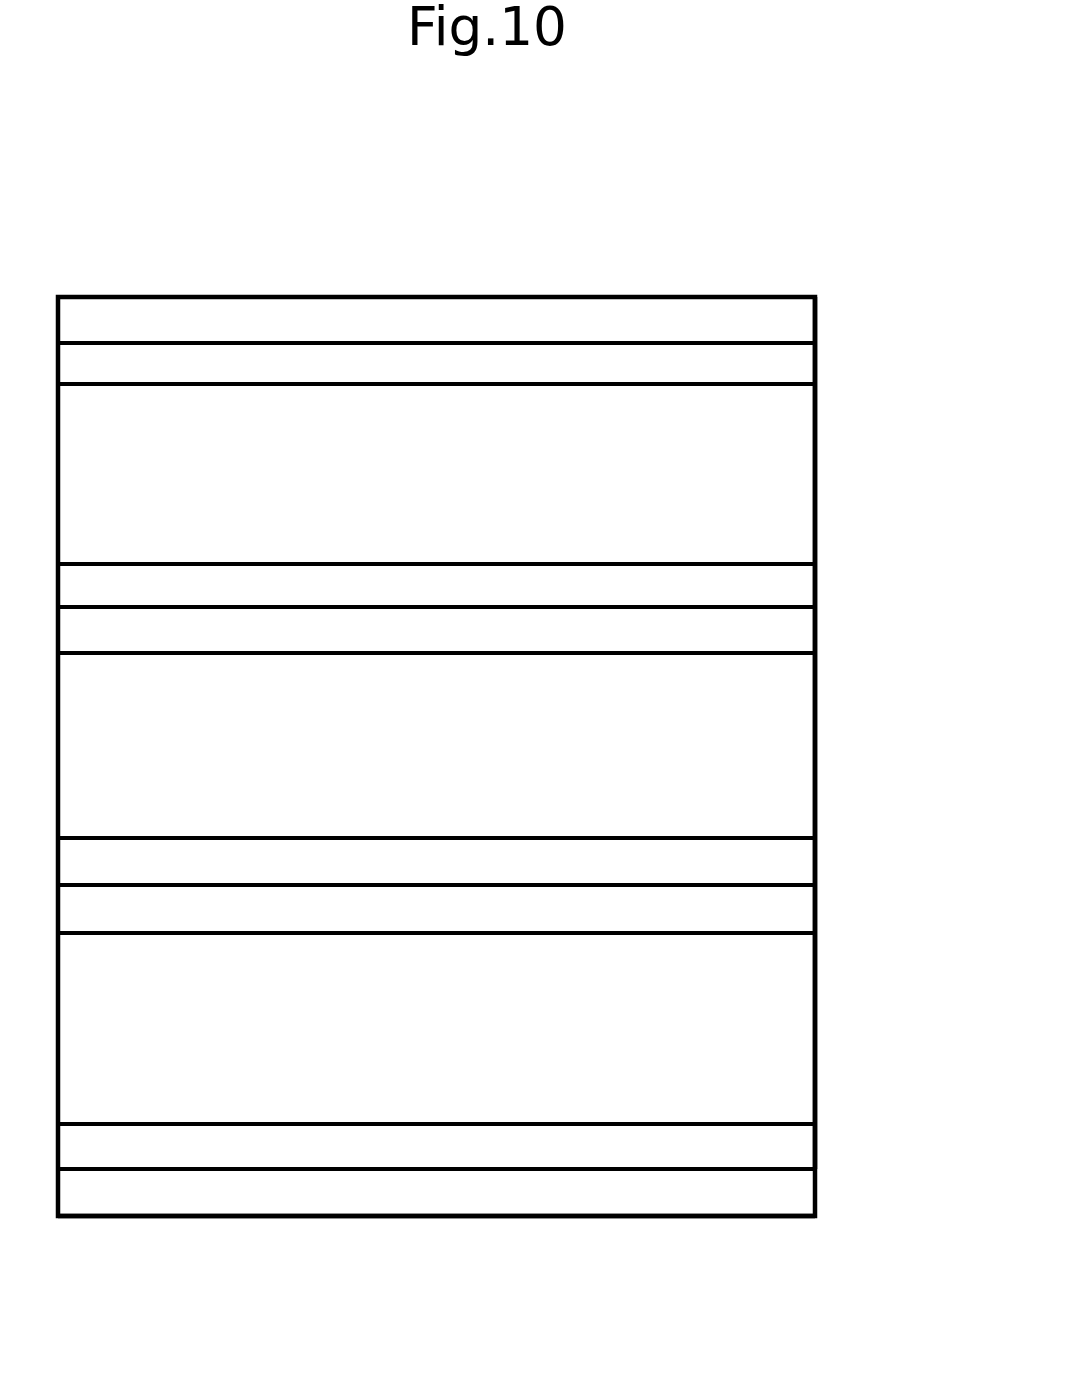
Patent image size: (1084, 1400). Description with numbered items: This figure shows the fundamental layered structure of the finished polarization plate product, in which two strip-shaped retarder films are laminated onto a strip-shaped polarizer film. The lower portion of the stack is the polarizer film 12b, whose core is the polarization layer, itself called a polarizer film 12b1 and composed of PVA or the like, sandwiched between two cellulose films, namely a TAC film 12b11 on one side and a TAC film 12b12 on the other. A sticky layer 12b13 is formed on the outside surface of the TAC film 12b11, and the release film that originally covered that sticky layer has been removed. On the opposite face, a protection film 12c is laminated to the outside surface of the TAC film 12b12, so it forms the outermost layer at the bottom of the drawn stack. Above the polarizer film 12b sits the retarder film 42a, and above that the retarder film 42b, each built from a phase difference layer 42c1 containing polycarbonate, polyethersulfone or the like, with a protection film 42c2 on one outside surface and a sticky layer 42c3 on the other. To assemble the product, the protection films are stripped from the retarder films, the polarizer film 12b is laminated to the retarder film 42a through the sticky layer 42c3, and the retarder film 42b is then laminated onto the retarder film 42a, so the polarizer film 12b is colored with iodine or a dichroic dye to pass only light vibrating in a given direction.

The protection film 42c2 is at (752, 322).
The phase difference layer 42c1 is at (803, 375).
The sticky layer 42c3 is at (778, 445).
The retarder film 42b is at (824, 491).
The retarder film 42a is at (834, 760).
The sticky layer 12b13 is at (780, 857).
The TAC film 12b11 is at (780, 912).
The polarizer film 12b is at (833, 1051).
The polarizer film 12b1 is at (790, 1070).
The TAC film 12b12 is at (795, 1155).
The protection film 12c is at (587, 1200).